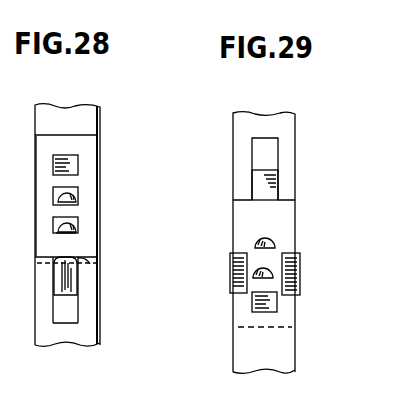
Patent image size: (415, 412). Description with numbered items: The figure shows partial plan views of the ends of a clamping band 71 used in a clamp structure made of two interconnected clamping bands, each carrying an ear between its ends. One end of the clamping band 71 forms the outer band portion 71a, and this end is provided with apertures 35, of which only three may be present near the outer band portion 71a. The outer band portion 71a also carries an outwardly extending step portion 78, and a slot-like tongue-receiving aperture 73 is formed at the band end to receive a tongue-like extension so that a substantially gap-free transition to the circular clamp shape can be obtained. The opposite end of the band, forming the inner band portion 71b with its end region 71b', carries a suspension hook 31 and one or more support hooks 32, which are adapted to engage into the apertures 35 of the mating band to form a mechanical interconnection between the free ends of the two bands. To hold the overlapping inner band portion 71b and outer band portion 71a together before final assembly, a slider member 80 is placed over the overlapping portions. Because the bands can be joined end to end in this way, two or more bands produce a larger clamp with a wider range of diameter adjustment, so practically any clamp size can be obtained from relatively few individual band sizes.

In FIG. 28, the clamping band 71 is at (106, 216).
In FIG. 28, the outer band portion 71a is at (92, 166).
In FIG. 29, the outer band portion 71a is at (290, 330).
In FIG. 28, the inner band portion 71b is at (106, 290).
In FIG. 29, the inner band portion 71b is at (294, 243).
In FIG. 29, the rail slot inner portion 71b' is at (308, 187).
In FIG. 28, the suspension hook 31 is at (53, 162).
In FIG. 29, the suspension hook 31 is at (252, 300).
In FIG. 28, the support hook 32 is at (55, 223).
In FIG. 29, the support hook 32 is at (258, 268).
In FIG. 28, the aperture 35 is at (72, 233).
In FIG. 28, the tongue-receiving aperture 73 is at (75, 312).
In FIG. 29, the tongue-receiving aperture 73 is at (275, 157).
In FIG. 28, the step portion 78 is at (89, 265).
In FIG. 29, the slider member 80 is at (228, 285).